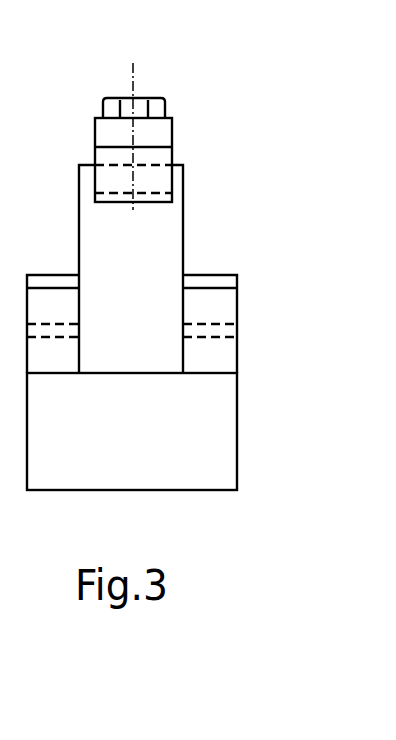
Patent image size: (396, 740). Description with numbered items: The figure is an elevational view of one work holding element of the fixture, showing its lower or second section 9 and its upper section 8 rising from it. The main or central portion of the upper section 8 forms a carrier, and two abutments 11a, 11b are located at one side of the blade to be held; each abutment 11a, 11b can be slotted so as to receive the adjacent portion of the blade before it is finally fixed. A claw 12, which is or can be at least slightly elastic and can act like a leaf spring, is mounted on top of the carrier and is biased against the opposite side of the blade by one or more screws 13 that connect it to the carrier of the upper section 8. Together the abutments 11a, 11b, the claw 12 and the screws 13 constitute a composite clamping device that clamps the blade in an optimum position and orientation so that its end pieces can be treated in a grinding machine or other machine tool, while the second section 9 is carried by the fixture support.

The screw 13 is at (158, 102).
The claw 12 is at (152, 134).
The upper section 8 is at (167, 240).
The abutment 11a is at (54, 307).
The abutment 11b is at (213, 305).
The second section 9 is at (208, 442).